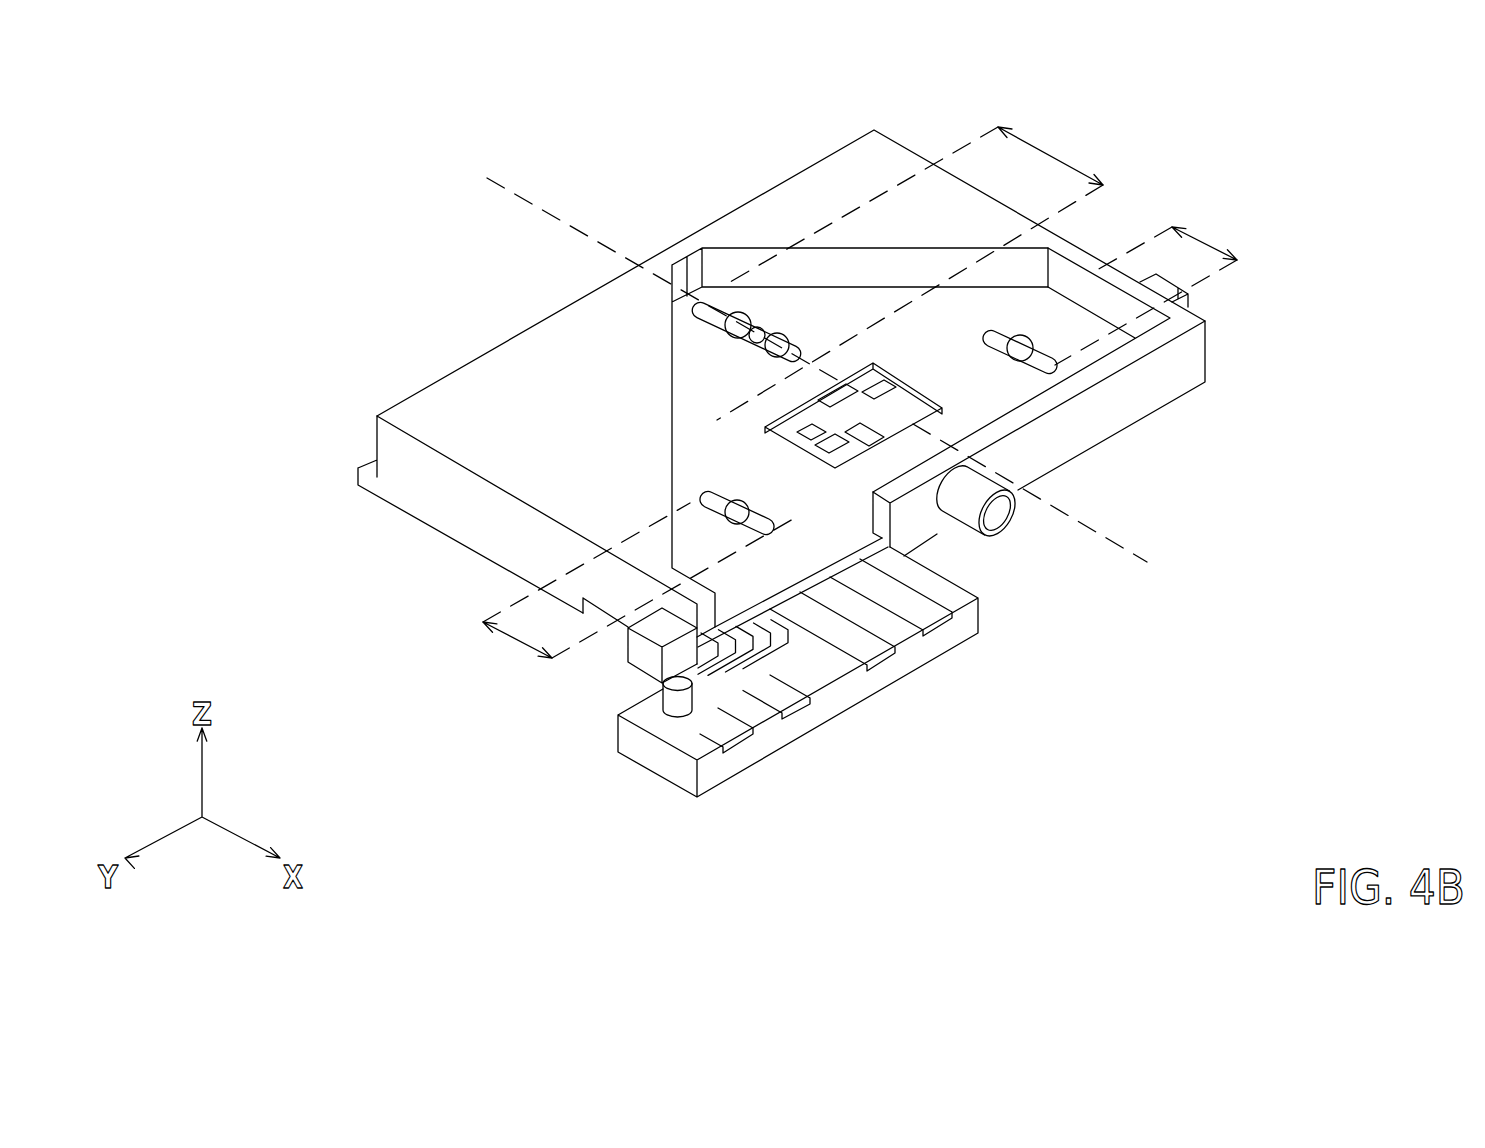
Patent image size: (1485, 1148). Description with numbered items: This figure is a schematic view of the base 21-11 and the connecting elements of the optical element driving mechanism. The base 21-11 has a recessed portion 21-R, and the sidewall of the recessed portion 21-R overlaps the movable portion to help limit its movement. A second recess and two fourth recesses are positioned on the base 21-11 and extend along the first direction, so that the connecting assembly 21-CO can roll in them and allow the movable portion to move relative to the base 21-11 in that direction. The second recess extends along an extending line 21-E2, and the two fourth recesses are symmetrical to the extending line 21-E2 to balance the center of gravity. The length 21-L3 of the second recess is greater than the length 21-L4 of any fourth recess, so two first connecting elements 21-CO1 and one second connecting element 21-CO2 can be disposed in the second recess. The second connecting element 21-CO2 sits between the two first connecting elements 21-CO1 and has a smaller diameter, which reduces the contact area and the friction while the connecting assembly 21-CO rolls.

The base 21-11 is at (1047, 442).
The recessed portion 21-R is at (711, 413).
The first connecting element 21-CO1 is at (775, 357).
The second connecting element 21-CO2 is at (755, 343).
The connecting assembly 21-CO is at (262, 102).
The extending line 21-E2 is at (859, 381).
The length of the second recess 21-L3 is at (926, 273).
The length of the fourth recess 21-L4 is at (858, 448).